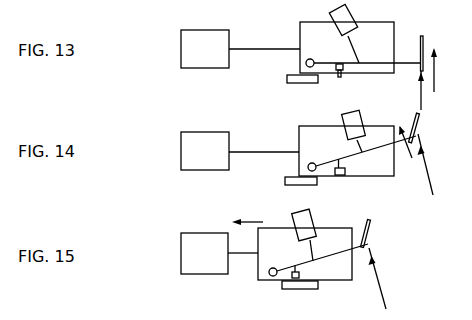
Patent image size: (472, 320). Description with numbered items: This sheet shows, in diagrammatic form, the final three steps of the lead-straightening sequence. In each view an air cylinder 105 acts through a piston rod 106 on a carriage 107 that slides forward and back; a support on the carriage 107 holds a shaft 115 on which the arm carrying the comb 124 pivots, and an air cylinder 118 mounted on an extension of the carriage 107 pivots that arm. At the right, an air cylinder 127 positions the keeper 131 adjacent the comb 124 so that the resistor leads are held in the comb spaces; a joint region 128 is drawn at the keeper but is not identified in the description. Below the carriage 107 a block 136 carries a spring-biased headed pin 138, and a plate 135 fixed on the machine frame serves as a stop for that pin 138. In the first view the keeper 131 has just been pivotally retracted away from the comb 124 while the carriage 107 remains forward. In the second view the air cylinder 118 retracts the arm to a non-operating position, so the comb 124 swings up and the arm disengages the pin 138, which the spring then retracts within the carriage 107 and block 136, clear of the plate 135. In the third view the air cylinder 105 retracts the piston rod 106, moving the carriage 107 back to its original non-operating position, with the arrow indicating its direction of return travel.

In FIG. 13, the air cylinder 105 is at (218, 30).
In FIG. 14, the air cylinder 105 is at (217, 133).
In FIG. 15, the air cylinder 105 is at (217, 237).
In FIG. 13, the piston rod 106 is at (273, 50).
In FIG. 14, the piston rod 106 is at (278, 151).
In FIG. 15, the piston rod 106 is at (256, 255).
In FIG. 13, the carriage 107 is at (328, 22).
In FIG. 14, the carriage 107 is at (329, 130).
In FIG. 15, the carriage 107 is at (282, 229).
In FIG. 13, the shaft 115 is at (306, 63).
In FIG. 14, the shaft 115 is at (304, 165).
In FIG. 13, the air cylinder 118 is at (350, 11).
In FIG. 14, the air cylinder 118 is at (355, 113).
In FIG. 15, the air cylinder 118 is at (318, 207).
In FIG. 13, the comb 124 is at (420, 87).
In FIG. 14, the comb 124 is at (424, 155).
In FIG. 15, the comb 124 is at (377, 262).
In FIG. 13, the air cylinder 127 is at (431, 36).
In FIG. 14, the air cylinder 127 is at (422, 128).
In FIG. 15, the air cylinder 127 is at (374, 229).
In FIG. 13, the mirror pivot 128 is at (420, 77).
In FIG. 14, the mirror pivot 128 is at (423, 145).
In FIG. 15, the mirror pivot 128 is at (375, 253).
In FIG. 13, the keeper 131 is at (422, 0).
In FIG. 14, the keeper 131 is at (421, 97).
In FIG. 15, the keeper 131 is at (385, 290).
In FIG. 13, the plate 135 is at (315, 83).
In FIG. 14, the plate 135 is at (312, 185).
In FIG. 15, the plate 135 is at (303, 289).
In FIG. 13, the block 136 is at (336, 76).
In FIG. 14, the block 136 is at (345, 173).
In FIG. 15, the block 136 is at (296, 282).
In FIG. 13, the headed pin 138 is at (344, 76).
In FIG. 14, the headed pin 138 is at (335, 170).
In FIG. 15, the headed pin 138 is at (290, 274).